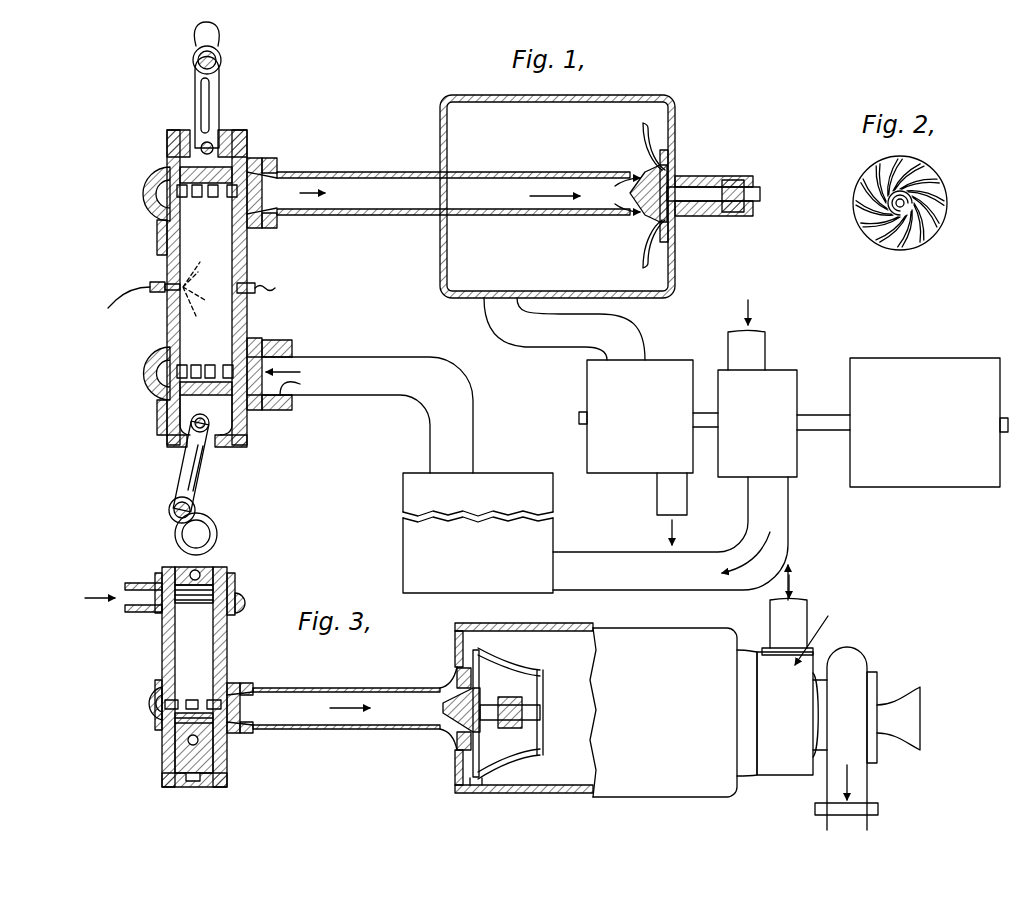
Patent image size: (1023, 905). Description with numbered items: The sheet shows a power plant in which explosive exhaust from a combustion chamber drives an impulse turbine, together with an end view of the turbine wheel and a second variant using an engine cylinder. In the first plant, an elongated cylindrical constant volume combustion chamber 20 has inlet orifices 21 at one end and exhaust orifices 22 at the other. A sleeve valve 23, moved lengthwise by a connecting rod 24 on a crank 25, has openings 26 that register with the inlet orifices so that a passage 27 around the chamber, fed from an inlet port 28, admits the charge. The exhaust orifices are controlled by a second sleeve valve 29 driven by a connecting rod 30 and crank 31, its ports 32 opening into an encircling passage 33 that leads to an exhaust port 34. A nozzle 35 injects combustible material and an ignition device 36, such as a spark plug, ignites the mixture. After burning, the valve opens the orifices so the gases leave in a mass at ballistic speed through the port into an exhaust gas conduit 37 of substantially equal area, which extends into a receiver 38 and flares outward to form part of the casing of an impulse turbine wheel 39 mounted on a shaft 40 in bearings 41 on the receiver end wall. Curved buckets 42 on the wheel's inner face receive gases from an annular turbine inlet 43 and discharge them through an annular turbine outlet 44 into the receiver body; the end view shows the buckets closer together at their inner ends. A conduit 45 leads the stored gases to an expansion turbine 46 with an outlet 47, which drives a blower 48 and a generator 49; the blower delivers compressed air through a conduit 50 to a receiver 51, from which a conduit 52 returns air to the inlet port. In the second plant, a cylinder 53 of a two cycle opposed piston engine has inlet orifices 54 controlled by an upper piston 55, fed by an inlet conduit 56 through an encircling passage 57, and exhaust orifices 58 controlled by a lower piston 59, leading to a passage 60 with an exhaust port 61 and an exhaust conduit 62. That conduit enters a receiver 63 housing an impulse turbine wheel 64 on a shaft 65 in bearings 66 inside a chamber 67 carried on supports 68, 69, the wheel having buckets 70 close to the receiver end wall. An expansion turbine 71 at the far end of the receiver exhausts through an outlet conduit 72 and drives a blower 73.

In FIG. 1, the constant volume combustion chamber 20 is at (248, 322).
In FIG. 1, the inlet orifices 21 is at (242, 405).
In FIG. 1, the exhaust orifices 22 is at (168, 170).
In FIG. 1, the sleeve valve 23 is at (168, 436).
In FIG. 1, the connecting rod 24 is at (203, 478).
In FIG. 1, the crank 25 is at (185, 535).
In FIG. 1, the openings 26 is at (255, 342).
In FIG. 1, the passage 27 is at (150, 376).
In FIG. 1, the inlet port 28 is at (293, 398).
In FIG. 1, the sleeve valve 29 is at (232, 136).
In FIG. 1, the connecting rod 30 is at (218, 104).
In FIG. 1, the crank 31 is at (221, 44).
In FIG. 1, the ports 32 is at (255, 224).
In FIG. 1, the passage 33 is at (150, 186).
In FIG. 1, the exhaust port 34 is at (272, 172).
In FIG. 1, the nozzle 35 is at (150, 282).
In FIG. 1, the ignition device 36 is at (258, 290).
In FIG. 1, the exhaust gas conduit 37 is at (370, 172).
In FIG. 1, the receiver 38 is at (549, 190).
In FIG. 1, the impulse turbine wheel 39 is at (672, 182).
In FIG. 2, the impulse turbine wheel 39 is at (942, 184).
In FIG. 1, the shaft 40 is at (718, 180).
In FIG. 1, the bearings 41 is at (712, 216).
In FIG. 1, the buckets 42 is at (672, 152).
In FIG. 2, the buckets 42 is at (880, 245).
In FIG. 1, the turbine inlet 43 is at (635, 178).
In FIG. 1, the turbine outlet 44 is at (670, 115).
In FIG. 1, the conduit 45 is at (525, 340).
In FIG. 1, the turbine 46 is at (587, 443).
In FIG. 1, the outlet 47 is at (683, 497).
In FIG. 1, the blower 48 is at (788, 388).
In FIG. 1, the generator 49 is at (918, 366).
In FIG. 1, the conduit 50 is at (780, 543).
In FIG. 1, the receiver 51 is at (418, 536).
In FIG. 1, the conduit 52 is at (364, 392).
In FIG. 3, the cylinder 53 is at (213, 648).
In FIG. 3, the inlet orifices 54 is at (222, 594).
In FIG. 3, the upper piston 55 is at (212, 570).
In FIG. 3, the inlet conduit 56 is at (136, 610).
In FIG. 3, the passage 57 is at (243, 602).
In FIG. 3, the exhaust orifices 58 is at (196, 698).
In FIG. 3, the lower piston 59 is at (205, 761).
In FIG. 3, the passage 60 is at (145, 705).
In FIG. 3, the exhaust port 61 is at (242, 690).
In FIG. 3, the exhaust conduit 62 is at (328, 728).
In FIG. 3, the receiver 63 is at (574, 788).
In FIG. 3, the impulse turbine wheel 64 is at (445, 700).
In FIG. 3, the shaft 65 is at (505, 697).
In FIG. 3, the bearings 66 is at (522, 705).
In FIG. 3, the chamber 67 is at (482, 650).
In FIG. 3, the support 68 is at (476, 782).
In FIG. 3, the support 69 is at (538, 770).
In FIG. 3, the buckets 70 is at (460, 675).
In FIG. 3, the expansion turbine 71 is at (782, 758).
In FIG. 3, the outlet conduit 72 is at (770, 609).
In FIG. 3, the blower 73 is at (853, 670).